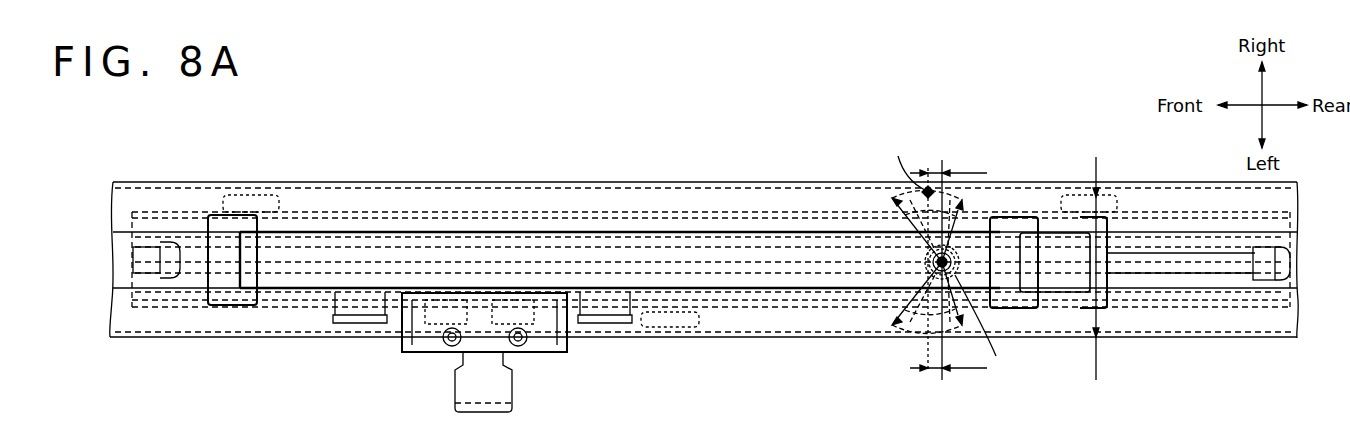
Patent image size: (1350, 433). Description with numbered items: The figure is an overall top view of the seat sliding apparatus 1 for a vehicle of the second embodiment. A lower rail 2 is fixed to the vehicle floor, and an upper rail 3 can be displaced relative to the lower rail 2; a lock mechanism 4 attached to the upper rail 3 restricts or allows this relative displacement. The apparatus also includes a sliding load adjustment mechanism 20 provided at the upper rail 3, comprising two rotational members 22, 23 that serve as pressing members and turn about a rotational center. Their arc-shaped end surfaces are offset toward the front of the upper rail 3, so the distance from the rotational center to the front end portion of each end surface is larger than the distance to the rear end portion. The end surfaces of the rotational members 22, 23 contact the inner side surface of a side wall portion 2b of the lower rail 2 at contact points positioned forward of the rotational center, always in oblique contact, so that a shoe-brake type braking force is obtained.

The seat sliding apparatus 1 is at (344, 150).
The lower rail 2 is at (192, 338).
The side wall portion 2b is at (704, 260).
The upper rail 3 is at (228, 306).
The lock mechanism 4 is at (577, 360).
The sliding load adjustment mechanism 20 is at (997, 166).
The first rotational member 22 is at (905, 333).
The second rotational member 23 is at (895, 197).